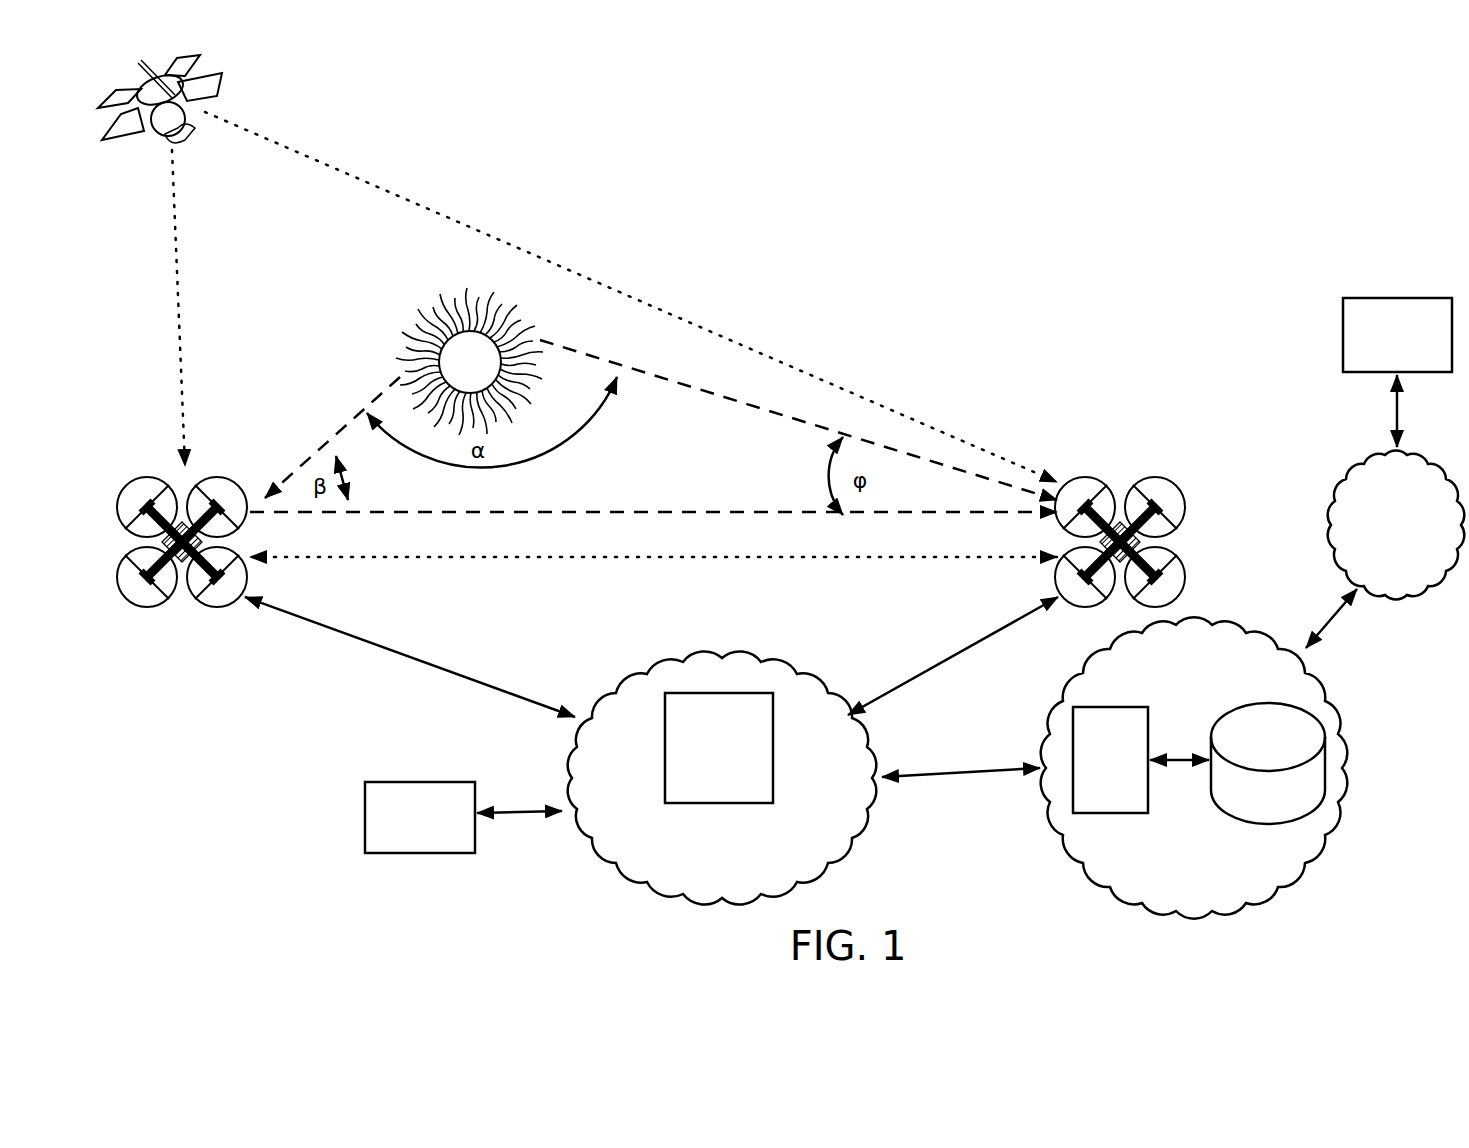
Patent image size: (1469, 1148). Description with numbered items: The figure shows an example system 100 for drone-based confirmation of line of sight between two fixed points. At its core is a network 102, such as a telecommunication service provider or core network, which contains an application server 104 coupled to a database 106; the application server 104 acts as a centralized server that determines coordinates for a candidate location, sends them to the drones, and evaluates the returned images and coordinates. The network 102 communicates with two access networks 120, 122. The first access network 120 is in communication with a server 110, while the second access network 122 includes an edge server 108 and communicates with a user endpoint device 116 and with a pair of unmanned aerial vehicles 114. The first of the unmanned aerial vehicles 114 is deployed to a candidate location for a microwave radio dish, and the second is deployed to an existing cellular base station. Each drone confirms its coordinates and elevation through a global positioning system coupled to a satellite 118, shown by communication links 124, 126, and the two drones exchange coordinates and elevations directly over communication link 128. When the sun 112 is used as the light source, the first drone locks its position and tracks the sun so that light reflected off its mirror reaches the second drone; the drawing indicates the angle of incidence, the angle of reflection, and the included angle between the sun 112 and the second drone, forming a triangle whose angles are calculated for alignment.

The system 100 is at (773, 90).
The network 102 is at (1194, 767).
The application server 104 is at (1110, 760).
The database 106 is at (1268, 763).
The edge server 108 is at (719, 748).
The server 110 is at (1397, 335).
The sun 112 is at (405, 332).
The unmanned aerial vehicles 114 is at (207, 483).
The user endpoint device 116 is at (420, 817).
The satellite 118 is at (215, 75).
The access network 120 is at (1396, 525).
The access network 122 is at (722, 777).
The communication link 124 is at (176, 268).
The communication link 126 is at (438, 215).
The communication link 128 is at (508, 558).